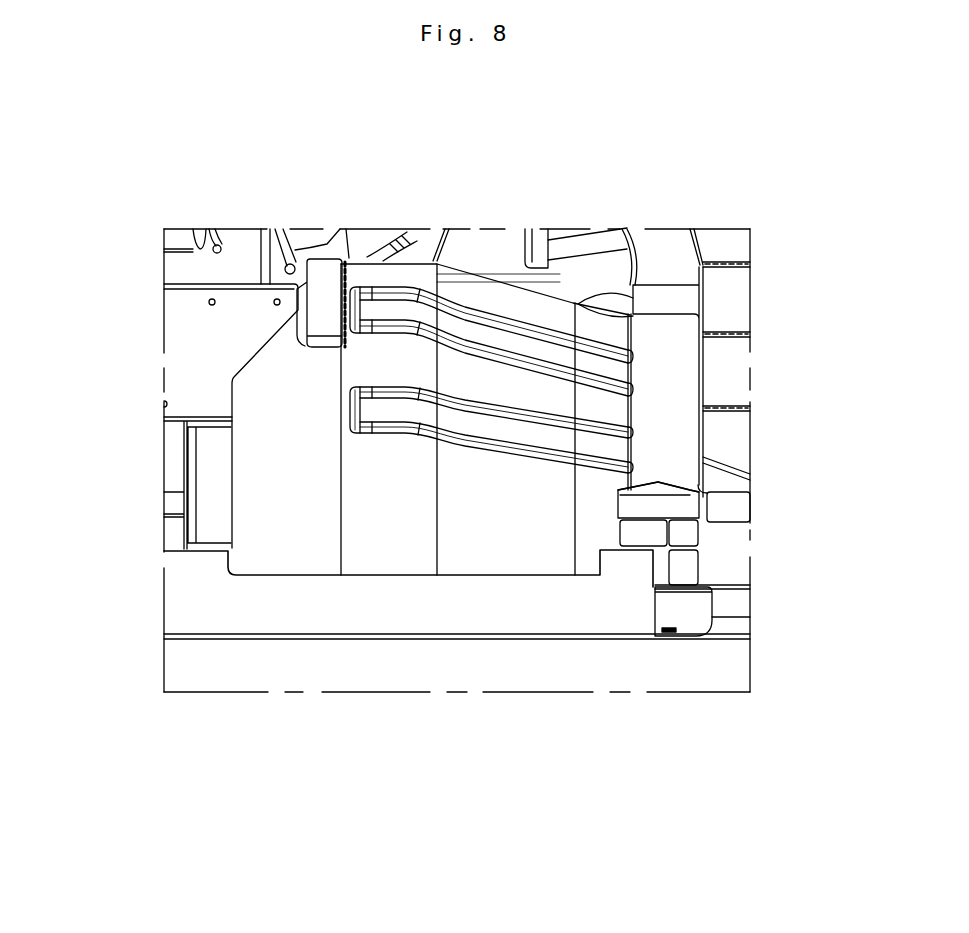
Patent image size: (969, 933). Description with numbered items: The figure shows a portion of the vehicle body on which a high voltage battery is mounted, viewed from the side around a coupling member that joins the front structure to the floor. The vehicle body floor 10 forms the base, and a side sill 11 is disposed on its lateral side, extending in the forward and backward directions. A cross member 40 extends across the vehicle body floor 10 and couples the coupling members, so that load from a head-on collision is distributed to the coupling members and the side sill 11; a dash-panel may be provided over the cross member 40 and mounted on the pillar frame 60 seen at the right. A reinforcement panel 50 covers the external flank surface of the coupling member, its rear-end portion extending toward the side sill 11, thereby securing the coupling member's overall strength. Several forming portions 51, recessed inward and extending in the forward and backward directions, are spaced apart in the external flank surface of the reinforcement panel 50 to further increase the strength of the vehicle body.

The vehicle body floor 10 is at (546, 603).
The side sill 11 is at (728, 560).
The cross member 40 is at (208, 346).
The reinforcement panel 50 is at (670, 431).
The forming portion 51 is at (521, 433).
The pillar frame 60 is at (725, 304).